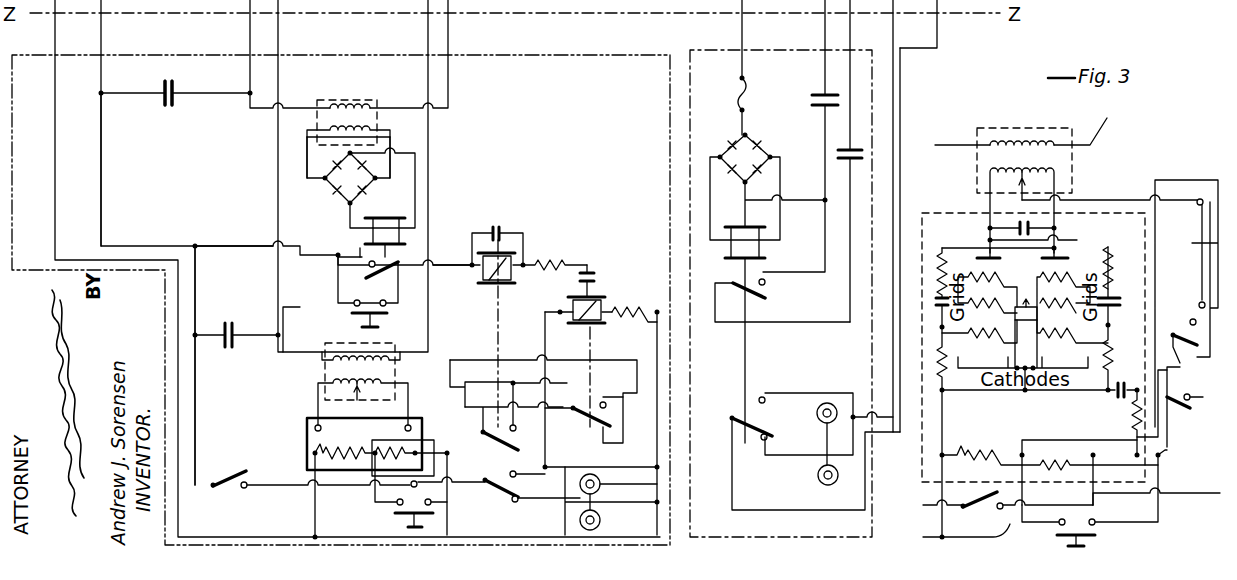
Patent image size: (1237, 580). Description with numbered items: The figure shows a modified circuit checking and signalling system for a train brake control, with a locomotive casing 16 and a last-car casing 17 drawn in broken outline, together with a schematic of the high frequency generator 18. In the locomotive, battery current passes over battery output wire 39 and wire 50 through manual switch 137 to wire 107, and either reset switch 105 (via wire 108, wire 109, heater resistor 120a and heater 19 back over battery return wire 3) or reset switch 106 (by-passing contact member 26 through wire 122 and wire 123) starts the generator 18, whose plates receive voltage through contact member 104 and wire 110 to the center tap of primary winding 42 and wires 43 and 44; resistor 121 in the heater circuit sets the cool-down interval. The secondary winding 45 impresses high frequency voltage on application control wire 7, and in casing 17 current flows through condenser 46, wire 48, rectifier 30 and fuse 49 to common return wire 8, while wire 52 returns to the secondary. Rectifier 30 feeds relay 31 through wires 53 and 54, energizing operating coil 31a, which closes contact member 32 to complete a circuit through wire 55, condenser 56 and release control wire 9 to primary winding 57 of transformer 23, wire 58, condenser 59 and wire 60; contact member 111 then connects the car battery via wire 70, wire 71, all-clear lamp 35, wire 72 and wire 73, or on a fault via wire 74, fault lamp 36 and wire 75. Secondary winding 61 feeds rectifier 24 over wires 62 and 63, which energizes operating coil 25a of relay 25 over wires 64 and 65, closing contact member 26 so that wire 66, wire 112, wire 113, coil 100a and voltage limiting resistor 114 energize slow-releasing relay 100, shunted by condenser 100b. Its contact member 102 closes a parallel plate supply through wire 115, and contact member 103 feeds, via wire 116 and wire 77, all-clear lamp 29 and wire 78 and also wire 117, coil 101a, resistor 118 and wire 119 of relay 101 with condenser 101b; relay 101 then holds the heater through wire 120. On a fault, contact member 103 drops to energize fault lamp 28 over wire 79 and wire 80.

In FIG. 2, the battery return wire 3 is at (262, 538).
In FIG. 3, the battery return wire 3 is at (976, 530).
In FIG. 2, the application control wire 7 is at (428, 195).
In FIG. 3, the application control wire 7 is at (952, 138).
In FIG. 2, the common return wire 8 is at (742, 68).
In FIG. 2, the release control wire 9 is at (850, 112).
In FIG. 2, the casing 16 is at (632, 52).
In FIG. 2, the casing 17 is at (730, 52).
In FIG. 2, the high frequency generator 18 is at (305, 435).
In FIG. 3, the high frequency generator 18 is at (932, 213).
In FIG. 2, the heater 19 is at (364, 444).
In FIG. 3, the heater 19 is at (960, 447).
In FIG. 2, the transformer 23 is at (365, 100).
In FIG. 2, the full-wave rectifier 24 is at (348, 171).
In FIG. 2, the relay 25 is at (420, 261).
In FIG. 2, the operating coil 25a is at (400, 222).
In FIG. 2, the contact member 26 is at (370, 274).
In FIG. 2, the fault signal lamp 28 is at (601, 520).
In FIG. 2, the all-clear lamp 29 is at (604, 482).
In FIG. 2, the full-wave rectifier 30 is at (745, 147).
In FIG. 2, the relay 31 is at (802, 269).
In FIG. 2, the operating coil 31a is at (760, 221).
In FIG. 2, the contact member 32 is at (745, 296).
In FIG. 2, the all-clear lamp 35 is at (817, 414).
In FIG. 2, the fault lamp 36 is at (818, 478).
In FIG. 2, the battery output wire 39 is at (103, 190).
In FIG. 3, the battery output wire 39 is at (930, 507).
In FIG. 2, the primary winding 42 is at (385, 381).
In FIG. 3, the primary winding 42 is at (1040, 163).
In FIG. 2, the wire 43 is at (318, 395).
In FIG. 3, the wire 43 is at (990, 200).
In FIG. 2, the wire 44 is at (395, 397).
In FIG. 3, the wire 44 is at (1060, 182).
In FIG. 2, the secondary winding 45 is at (339, 343).
In FIG. 3, the secondary winding 45 is at (1030, 140).
In FIG. 2, the condenser 46 is at (810, 98).
In FIG. 2, the wire 48 is at (795, 198).
In FIG. 2, the fuse 49 is at (737, 98).
In FIG. 2, the wire 50 is at (197, 276).
In FIG. 2, the wire 52 is at (270, 335).
In FIG. 2, the wire 53 is at (708, 187).
In FIG. 2, the wire 54 is at (766, 226).
In FIG. 2, the wire 55 is at (832, 323).
In FIG. 2, the condenser 56 is at (848, 160).
In FIG. 2, the primary winding 57 is at (345, 102).
In FIG. 2, the wire 58 is at (220, 96).
In FIG. 2, the condenser 59 is at (163, 101).
In FIG. 2, the wire 60 is at (135, 92).
In FIG. 2, the secondary winding 61 is at (378, 124).
In FIG. 2, the wire 62 is at (307, 152).
In FIG. 2, the wire 63 is at (390, 165).
In FIG. 2, the wire 64 is at (352, 214).
In FIG. 2, the wire 65 is at (415, 193).
In FIG. 2, the wire 66 is at (246, 244).
In FIG. 2, the wire 70 is at (722, 496).
In FIG. 3, the wire 70 is at (900, 88).
In FIG. 2, the wire 71 is at (790, 393).
In FIG. 2, the wire 72 is at (848, 393).
In FIG. 2, the wire 73 is at (893, 350).
In FIG. 3, the wire 73 is at (893, 30).
In FIG. 2, the wire 74 is at (777, 455).
In FIG. 2, the wire 75 is at (845, 461).
In FIG. 2, the wire 77 is at (560, 471).
In FIG. 2, the wire 78 is at (618, 470).
In FIG. 2, the wire 79 is at (538, 495).
In FIG. 2, the wire 80 is at (632, 508).
In FIG. 2, the relay 100 is at (492, 354).
In FIG. 2, the coil 100a is at (483, 333).
In FIG. 2, the condenser 100b is at (500, 233).
In FIG. 2, the relay 101 is at (585, 354).
In FIG. 2, the coil 101a is at (563, 310).
In FIG. 2, the condenser 101b is at (588, 262).
In FIG. 2, the contact member 102 is at (514, 432).
In FIG. 3, the contact member 102 is at (1188, 448).
In FIG. 2, the contact member 103 is at (495, 490).
In FIG. 2, the contact member 104 is at (599, 416).
In FIG. 3, the contact member 104 is at (1190, 318).
In FIG. 2, the reset switch 105 is at (434, 516).
In FIG. 3, the reset switch 105 is at (1098, 538).
In FIG. 2, the reset switch 106 is at (388, 314).
In FIG. 2, the wire 107 is at (280, 482).
In FIG. 3, the wire 107 is at (1082, 503).
In FIG. 2, the wire 108 is at (448, 472).
In FIG. 3, the wire 108 is at (1160, 524).
In FIG. 2, the wire 109 is at (376, 502).
In FIG. 3, the wire 109 is at (1022, 525).
In FIG. 2, the wire 110 is at (483, 385).
In FIG. 3, the wire 110 is at (1109, 206).
In FIG. 2, the contact member 111 is at (731, 420).
In FIG. 2, the wire 112 is at (356, 253).
In FIG. 2, the wire 113 is at (452, 252).
In FIG. 2, the voltage limiting resistor 114 is at (548, 264).
In FIG. 2, the wire 115 is at (537, 396).
In FIG. 3, the wire 115 is at (1182, 407).
In FIG. 2, the wire 116 is at (450, 505).
In FIG. 3, the wire 116 is at (1173, 518).
In FIG. 2, the wire 117 is at (540, 425).
In FIG. 2, the voltage limiting resistor 118 is at (614, 309).
In FIG. 2, the wire 119 is at (652, 318).
In FIG. 2, the wire 120 is at (637, 370).
In FIG. 3, the wire 120 is at (1092, 437).
In FIG. 2, the heater resistor 120a is at (374, 480).
In FIG. 3, the heater resistor 120a is at (999, 449).
In FIG. 2, the resistor 121 is at (458, 462).
In FIG. 3, the resistor 121 is at (1057, 480).
In FIG. 2, the wire 122 is at (338, 286).
In FIG. 2, the wire 123 is at (368, 281).
In FIG. 2, the manual switch 137 is at (240, 480).
In FIG. 3, the manual switch 137 is at (990, 500).